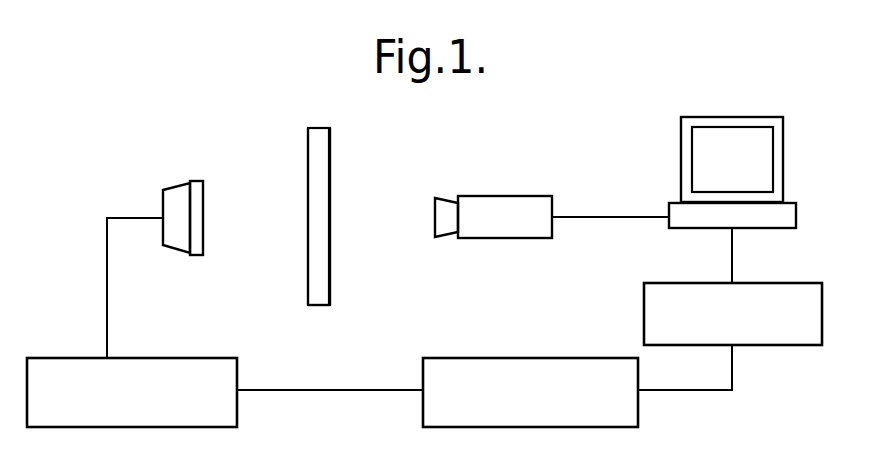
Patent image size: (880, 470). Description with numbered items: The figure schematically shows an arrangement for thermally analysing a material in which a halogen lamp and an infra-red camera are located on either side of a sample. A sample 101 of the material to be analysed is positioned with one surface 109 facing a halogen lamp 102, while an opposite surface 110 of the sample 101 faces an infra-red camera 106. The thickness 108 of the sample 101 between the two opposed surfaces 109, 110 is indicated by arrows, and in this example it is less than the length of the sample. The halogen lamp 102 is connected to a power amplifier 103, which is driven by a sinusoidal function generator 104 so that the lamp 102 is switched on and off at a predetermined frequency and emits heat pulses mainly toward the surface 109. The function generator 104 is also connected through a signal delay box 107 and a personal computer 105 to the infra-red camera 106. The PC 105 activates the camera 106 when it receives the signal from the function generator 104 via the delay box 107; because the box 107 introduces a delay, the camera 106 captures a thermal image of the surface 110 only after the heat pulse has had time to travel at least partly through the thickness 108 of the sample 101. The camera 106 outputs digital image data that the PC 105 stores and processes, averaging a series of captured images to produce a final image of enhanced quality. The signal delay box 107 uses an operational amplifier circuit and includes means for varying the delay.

The sample 101 is at (350, 147).
The halogen lamp 102 is at (203, 221).
The power amplifier 103 is at (75, 358).
The function generator 104 is at (471, 358).
The personal computer 105 is at (783, 147).
The infra-red camera 106 is at (526, 196).
The signal delay box 107 is at (683, 283).
The thickness 108 is at (315, 281).
The surface 109 is at (308, 250).
The opposite surface 110 is at (332, 206).